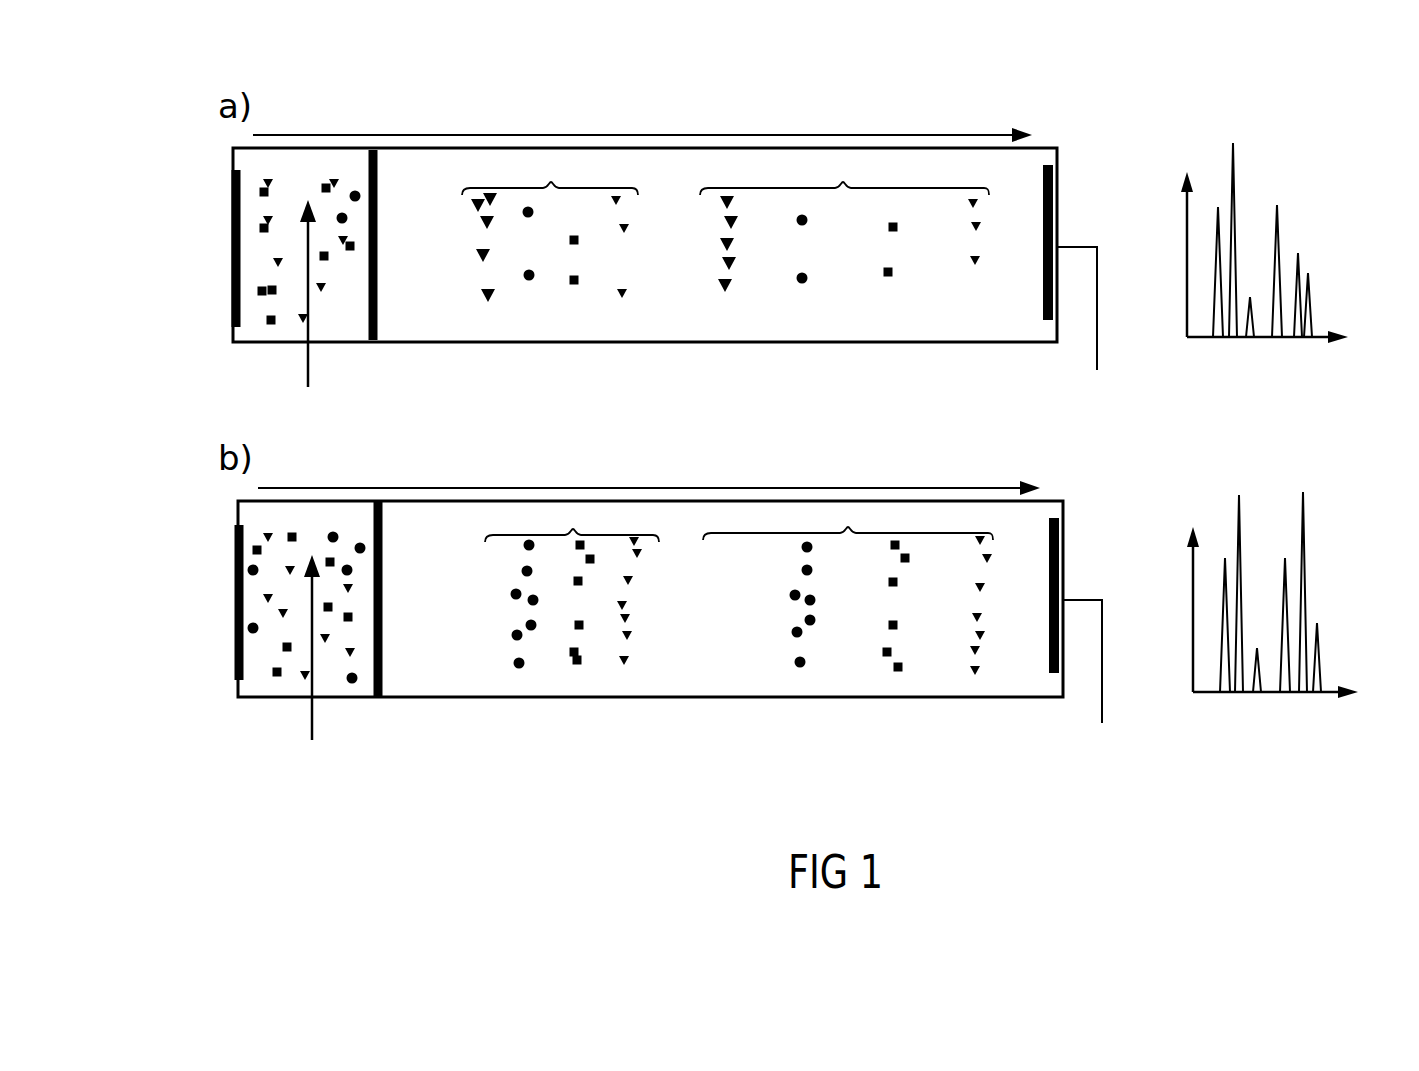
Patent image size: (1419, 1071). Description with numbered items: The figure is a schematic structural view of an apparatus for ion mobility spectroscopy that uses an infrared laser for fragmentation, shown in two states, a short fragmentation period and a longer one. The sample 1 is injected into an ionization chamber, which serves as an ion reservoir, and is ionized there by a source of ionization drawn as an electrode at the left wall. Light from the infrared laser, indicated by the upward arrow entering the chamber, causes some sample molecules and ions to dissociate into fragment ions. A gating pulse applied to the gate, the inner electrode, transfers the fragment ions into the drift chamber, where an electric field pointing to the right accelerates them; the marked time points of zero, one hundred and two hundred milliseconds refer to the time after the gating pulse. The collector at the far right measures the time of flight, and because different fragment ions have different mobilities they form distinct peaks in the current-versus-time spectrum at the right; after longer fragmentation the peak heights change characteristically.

The sample 1 is at (265, 190).